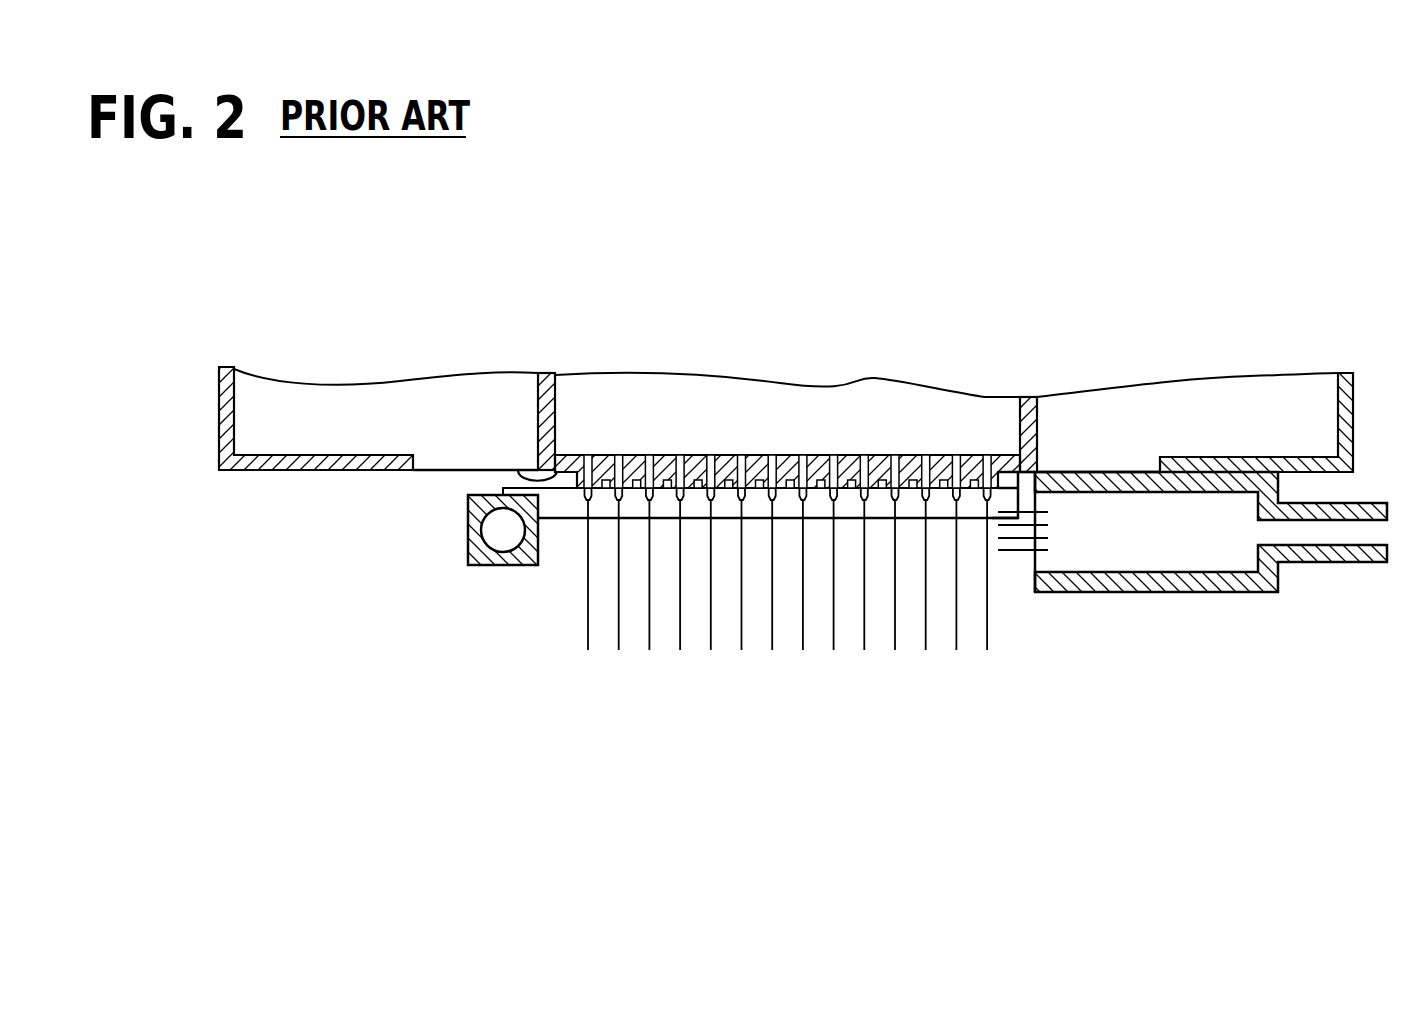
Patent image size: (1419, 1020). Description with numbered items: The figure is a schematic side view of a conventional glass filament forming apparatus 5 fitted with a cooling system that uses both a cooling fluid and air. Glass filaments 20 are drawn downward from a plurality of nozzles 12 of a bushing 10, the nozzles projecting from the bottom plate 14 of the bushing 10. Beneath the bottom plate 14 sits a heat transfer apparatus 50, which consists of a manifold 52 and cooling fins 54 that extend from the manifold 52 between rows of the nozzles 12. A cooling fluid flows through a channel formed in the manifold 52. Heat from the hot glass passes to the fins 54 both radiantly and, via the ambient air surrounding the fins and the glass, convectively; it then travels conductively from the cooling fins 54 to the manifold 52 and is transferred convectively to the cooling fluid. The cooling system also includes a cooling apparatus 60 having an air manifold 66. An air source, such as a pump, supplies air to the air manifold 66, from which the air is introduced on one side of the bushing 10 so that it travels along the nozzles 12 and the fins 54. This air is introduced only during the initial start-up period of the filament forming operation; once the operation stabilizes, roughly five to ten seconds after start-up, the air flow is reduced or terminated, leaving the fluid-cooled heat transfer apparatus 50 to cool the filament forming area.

The glass filament forming apparatus 5 is at (831, 346).
The bushing 10 is at (1021, 399).
The nozzles 12 is at (720, 470).
The bottom plate 14 is at (518, 471).
The filaments 20 is at (802, 632).
The heat transfer apparatus 50 is at (680, 580).
The manifold 52 is at (493, 566).
The cooling fins 54 is at (560, 507).
The cooling apparatus 60 is at (1189, 604).
The air manifold 66 is at (1183, 558).